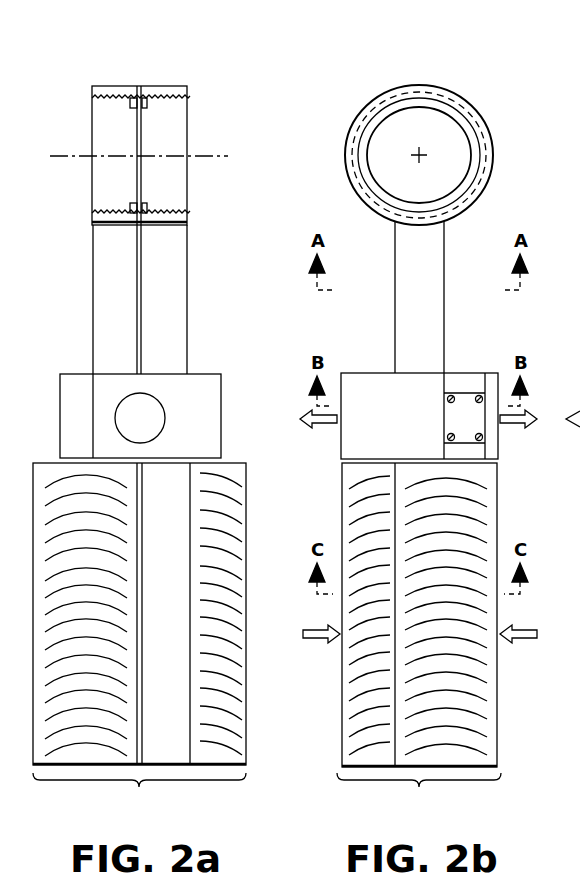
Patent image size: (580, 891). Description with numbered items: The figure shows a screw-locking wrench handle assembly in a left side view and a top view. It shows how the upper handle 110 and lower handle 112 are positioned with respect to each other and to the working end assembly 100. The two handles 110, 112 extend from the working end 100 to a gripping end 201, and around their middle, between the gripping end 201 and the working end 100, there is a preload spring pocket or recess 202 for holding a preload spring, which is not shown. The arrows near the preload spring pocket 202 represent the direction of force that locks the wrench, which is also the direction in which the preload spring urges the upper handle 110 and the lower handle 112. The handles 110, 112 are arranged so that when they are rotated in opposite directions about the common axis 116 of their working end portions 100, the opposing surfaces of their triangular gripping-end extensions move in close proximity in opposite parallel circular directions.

In FIG. 2A, the working end assembly 100 is at (177, 81).
In FIG. 2B, the working end assembly 100 is at (484, 113).
In FIG. 2A, the upper handle 110 is at (183, 299).
In FIG. 2B, the upper handle 110 is at (403, 323).
In FIG. 2A, the lower handle 112 is at (97, 299).
In FIG. 2B, the lower handle 112 is at (490, 373).
In FIG. 2A, the common axis 116 is at (216, 155).
In FIG. 2A, the gripping end 201 is at (139, 796).
In FIG. 2B, the gripping end 201 is at (419, 796).
In FIG. 2A, the preload spring pocket 202 is at (133, 410).
In FIG. 2B, the preload spring pocket 202 is at (463, 386).